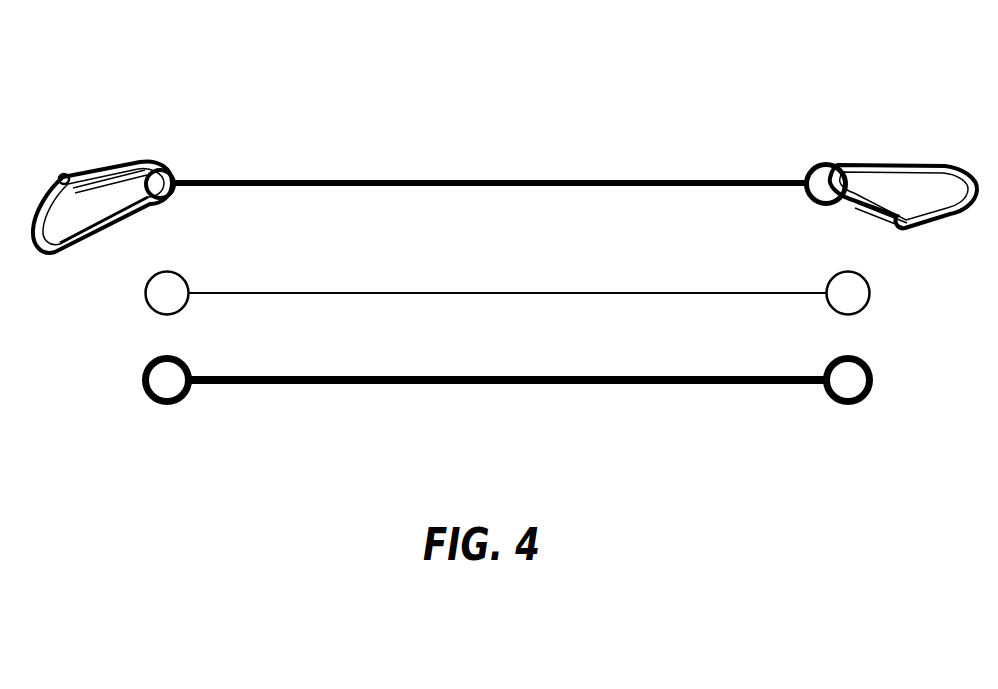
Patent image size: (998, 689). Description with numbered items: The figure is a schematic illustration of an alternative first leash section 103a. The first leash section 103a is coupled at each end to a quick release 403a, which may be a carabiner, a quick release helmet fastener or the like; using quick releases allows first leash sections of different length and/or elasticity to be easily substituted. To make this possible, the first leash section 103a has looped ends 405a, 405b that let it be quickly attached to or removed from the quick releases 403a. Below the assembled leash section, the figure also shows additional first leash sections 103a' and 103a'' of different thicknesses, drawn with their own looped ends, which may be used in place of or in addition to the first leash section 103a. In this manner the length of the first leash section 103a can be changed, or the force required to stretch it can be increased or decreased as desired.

The first leash section 103a is at (490, 106).
The first leash section 103a' is at (508, 280).
The first leash section 103a'' is at (508, 365).
The first quick release 403a is at (108, 182).
The looped end 405a is at (172, 172).
The looped end 405b is at (820, 163).